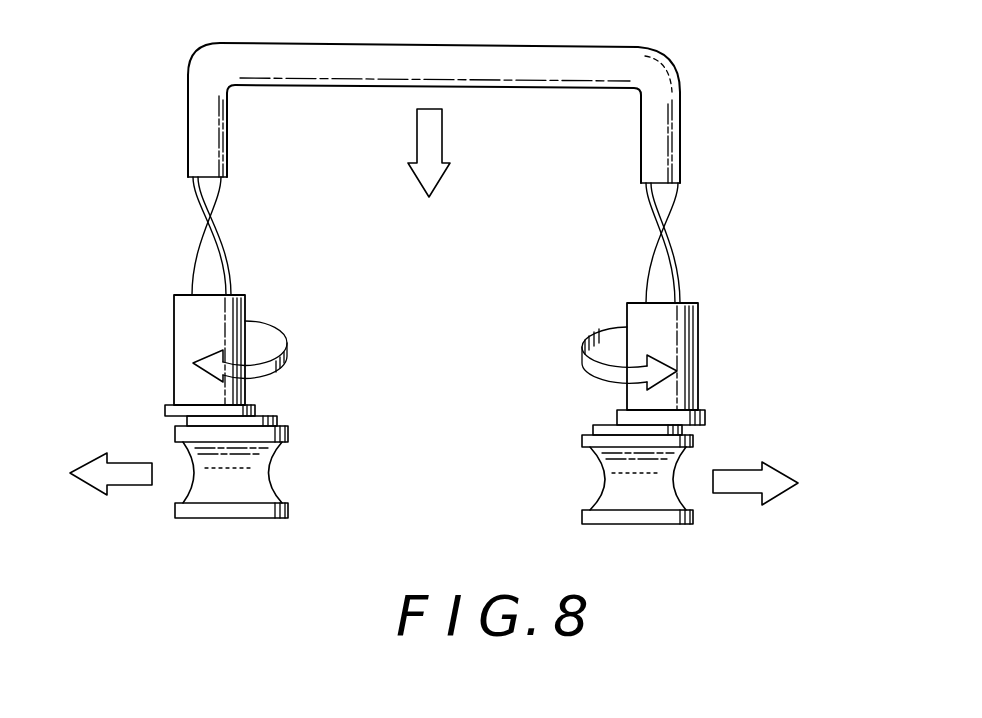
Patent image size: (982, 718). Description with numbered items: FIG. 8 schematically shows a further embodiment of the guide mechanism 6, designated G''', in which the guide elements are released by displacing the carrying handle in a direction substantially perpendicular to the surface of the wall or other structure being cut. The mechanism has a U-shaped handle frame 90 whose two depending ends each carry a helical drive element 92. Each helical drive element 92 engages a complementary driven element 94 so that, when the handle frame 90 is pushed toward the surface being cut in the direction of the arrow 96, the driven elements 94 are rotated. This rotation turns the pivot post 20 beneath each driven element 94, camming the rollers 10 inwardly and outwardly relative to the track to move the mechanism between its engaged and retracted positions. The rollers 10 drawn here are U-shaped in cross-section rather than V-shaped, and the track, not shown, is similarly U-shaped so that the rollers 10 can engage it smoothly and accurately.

The handle frame 90 is at (198, 90).
The arrow 96 is at (416, 137).
The helical drive element 92 is at (227, 270).
The driven element 94 is at (183, 308).
The pivot post 20 is at (253, 406).
The roller 10 is at (278, 494).
The guide mechanism 6 is at (700, 142).